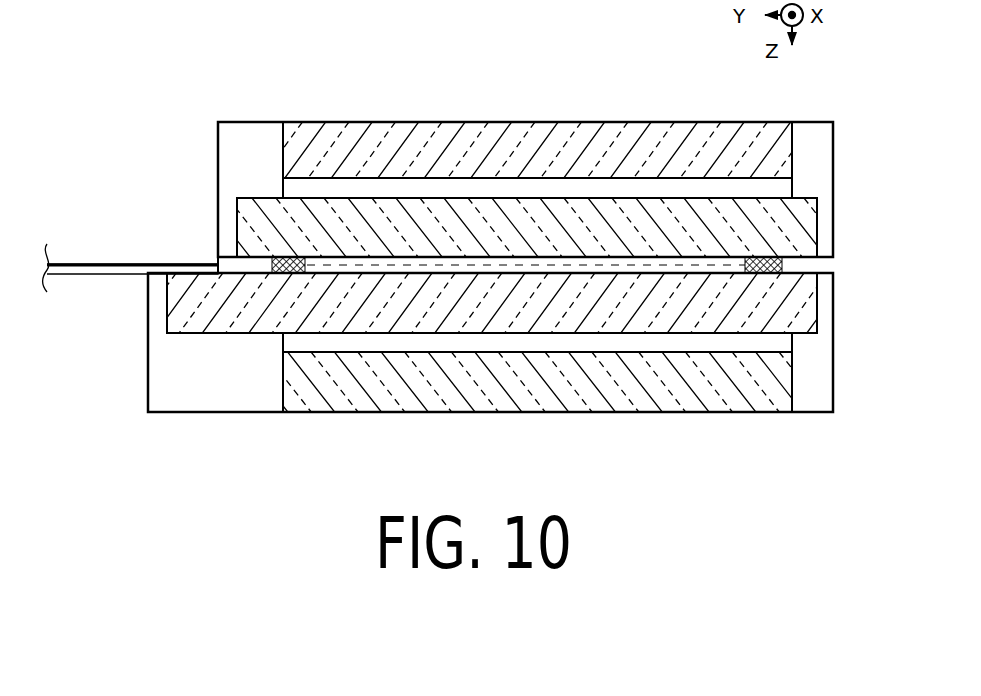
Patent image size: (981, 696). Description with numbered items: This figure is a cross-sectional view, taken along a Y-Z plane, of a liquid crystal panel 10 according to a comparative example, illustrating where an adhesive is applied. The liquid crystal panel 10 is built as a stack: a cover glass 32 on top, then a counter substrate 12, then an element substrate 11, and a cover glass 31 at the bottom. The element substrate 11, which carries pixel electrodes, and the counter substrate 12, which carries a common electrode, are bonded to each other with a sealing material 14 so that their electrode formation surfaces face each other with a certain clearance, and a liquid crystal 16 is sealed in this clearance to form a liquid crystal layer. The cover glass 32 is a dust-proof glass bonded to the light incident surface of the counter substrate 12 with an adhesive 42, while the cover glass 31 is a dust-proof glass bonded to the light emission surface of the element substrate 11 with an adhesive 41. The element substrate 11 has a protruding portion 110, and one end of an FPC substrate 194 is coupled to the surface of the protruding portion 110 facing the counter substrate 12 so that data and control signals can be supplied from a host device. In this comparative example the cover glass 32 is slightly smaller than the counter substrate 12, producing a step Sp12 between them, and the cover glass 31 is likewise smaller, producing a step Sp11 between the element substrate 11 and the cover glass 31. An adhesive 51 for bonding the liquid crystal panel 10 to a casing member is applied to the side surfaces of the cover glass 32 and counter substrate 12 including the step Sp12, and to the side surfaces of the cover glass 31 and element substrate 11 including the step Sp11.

The liquid crystal panel 10 is at (128, 32).
The element substrate 11 is at (183, 298).
The counter substrate 12 is at (430, 240).
The sealing material 14 is at (770, 265).
The liquid crystal 16 is at (566, 270).
The cover glass 31 is at (500, 395).
The cover glass 32 is at (498, 133).
The adhesive 41 is at (772, 341).
The adhesive 42 is at (772, 188).
The adhesive 51 is at (231, 161).
The protruding portion 110 is at (232, 272).
The FPC substrate 194 is at (75, 267).
The step Sp12 is at (266, 166).
The step Sp11 is at (199, 366).